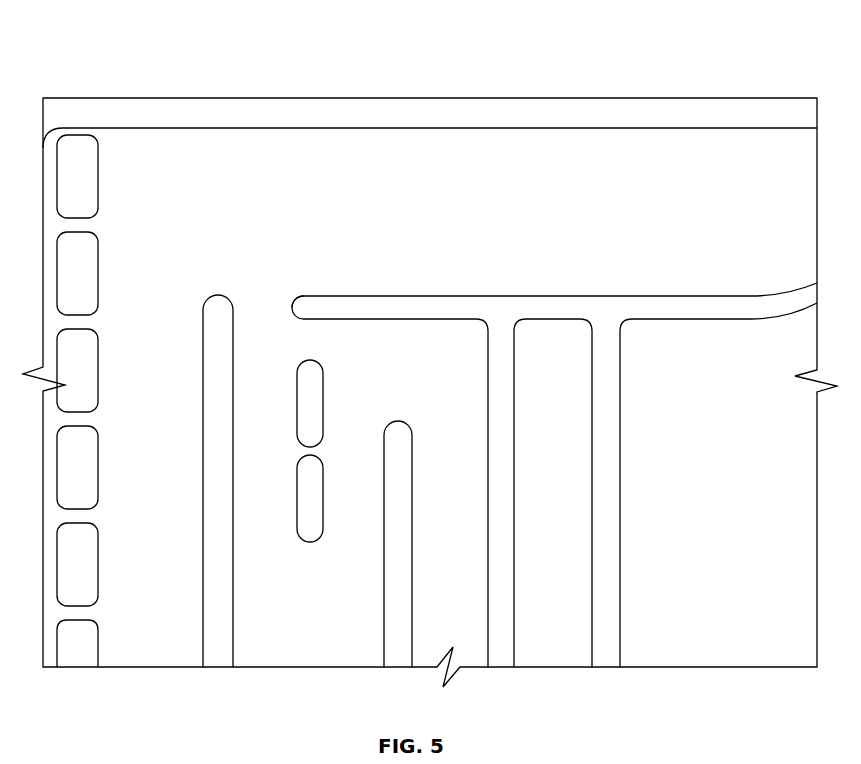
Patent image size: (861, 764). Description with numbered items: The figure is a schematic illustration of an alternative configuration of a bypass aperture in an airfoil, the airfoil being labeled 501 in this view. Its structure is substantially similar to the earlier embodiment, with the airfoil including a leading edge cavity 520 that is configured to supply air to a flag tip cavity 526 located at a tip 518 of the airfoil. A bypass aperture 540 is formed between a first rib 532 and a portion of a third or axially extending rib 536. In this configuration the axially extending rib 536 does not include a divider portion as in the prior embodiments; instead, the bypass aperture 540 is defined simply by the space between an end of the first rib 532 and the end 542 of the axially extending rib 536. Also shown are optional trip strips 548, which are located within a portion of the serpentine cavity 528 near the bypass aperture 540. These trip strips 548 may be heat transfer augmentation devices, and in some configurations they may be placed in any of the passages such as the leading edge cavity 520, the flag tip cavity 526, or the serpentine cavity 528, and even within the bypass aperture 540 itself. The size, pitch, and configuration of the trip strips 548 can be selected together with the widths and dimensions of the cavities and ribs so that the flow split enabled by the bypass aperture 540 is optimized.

The heat exchanger plate assembly 501 is at (97, 39).
The tip 518 is at (514, 112).
The leading edge cavity 520 is at (110, 401).
The flag tip cavity 526 is at (500, 177).
The serpentine cavity 528 is at (441, 493).
The first rib 532 is at (218, 434).
The third or axially extending rib 536 is at (462, 303).
The bypass aperture 540 is at (262, 272).
The channel end 542 is at (318, 302).
The trip strips 548 is at (328, 401).